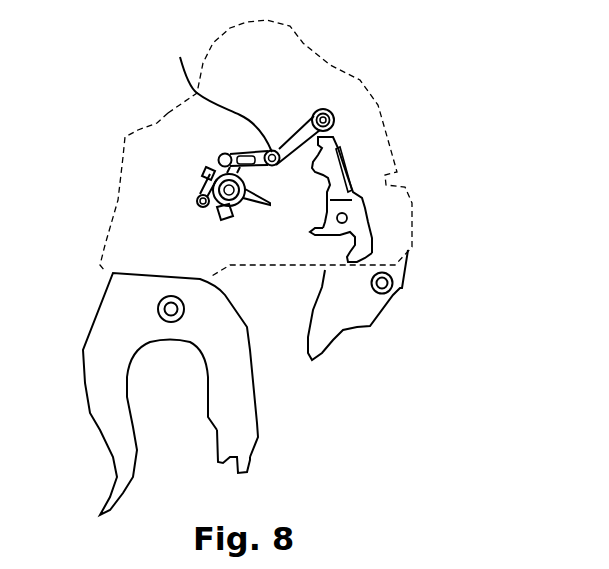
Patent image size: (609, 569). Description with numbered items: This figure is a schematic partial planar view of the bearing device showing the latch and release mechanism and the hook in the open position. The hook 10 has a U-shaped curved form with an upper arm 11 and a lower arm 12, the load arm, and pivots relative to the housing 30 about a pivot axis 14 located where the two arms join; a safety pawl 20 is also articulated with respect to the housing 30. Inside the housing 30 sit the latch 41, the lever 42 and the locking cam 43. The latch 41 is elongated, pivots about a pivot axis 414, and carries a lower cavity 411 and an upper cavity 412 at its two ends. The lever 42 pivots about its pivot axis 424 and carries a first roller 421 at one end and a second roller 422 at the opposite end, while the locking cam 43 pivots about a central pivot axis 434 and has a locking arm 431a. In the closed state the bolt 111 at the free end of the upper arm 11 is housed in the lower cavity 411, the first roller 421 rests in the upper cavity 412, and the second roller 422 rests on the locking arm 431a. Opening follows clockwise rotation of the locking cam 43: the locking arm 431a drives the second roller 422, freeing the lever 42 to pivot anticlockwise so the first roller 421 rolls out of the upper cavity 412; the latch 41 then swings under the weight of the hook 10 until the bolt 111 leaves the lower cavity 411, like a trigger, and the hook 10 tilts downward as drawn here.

The hook 10 is at (83, 365).
The upper arm 11 is at (245, 407).
The lower arm 12 is at (118, 406).
The pivot axis of the hook 14 is at (157, 307).
The safety pawl 20 is at (370, 327).
The housing 30 is at (168, 113).
The latch 41 is at (341, 162).
The lever 42 is at (288, 145).
The locking cam 43 is at (205, 174).
The bolt 111 is at (250, 458).
The lower cavity 411 is at (353, 243).
The upper cavity 412 is at (340, 137).
The pivot axis of the latch 414 is at (348, 217).
The first roller 421 is at (332, 108).
The second roller 422 is at (220, 152).
The pivot axis of the lever 424 is at (216, 92).
The locking arm 431a is at (243, 172).
The central pivot axis 434 is at (212, 212).